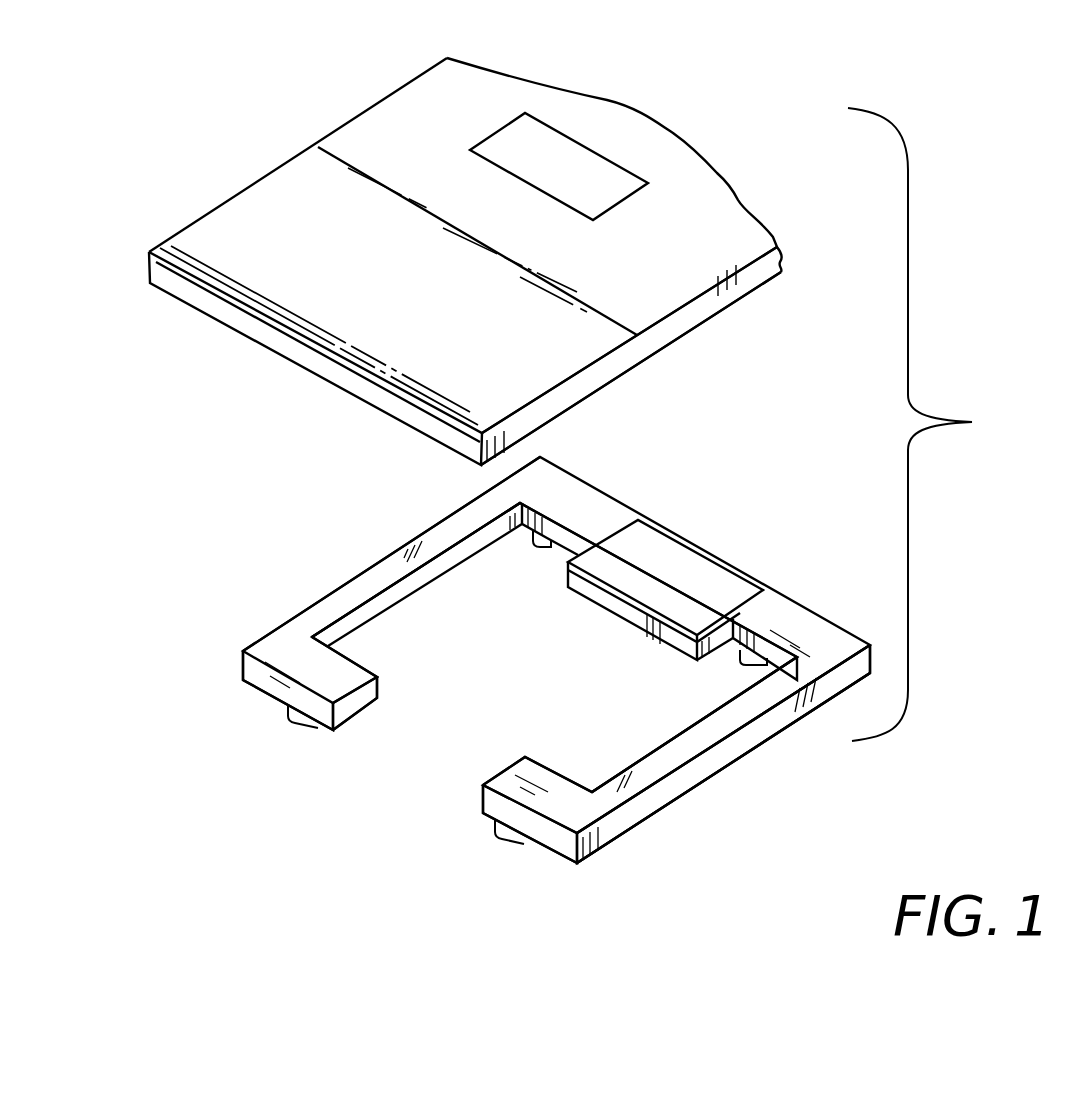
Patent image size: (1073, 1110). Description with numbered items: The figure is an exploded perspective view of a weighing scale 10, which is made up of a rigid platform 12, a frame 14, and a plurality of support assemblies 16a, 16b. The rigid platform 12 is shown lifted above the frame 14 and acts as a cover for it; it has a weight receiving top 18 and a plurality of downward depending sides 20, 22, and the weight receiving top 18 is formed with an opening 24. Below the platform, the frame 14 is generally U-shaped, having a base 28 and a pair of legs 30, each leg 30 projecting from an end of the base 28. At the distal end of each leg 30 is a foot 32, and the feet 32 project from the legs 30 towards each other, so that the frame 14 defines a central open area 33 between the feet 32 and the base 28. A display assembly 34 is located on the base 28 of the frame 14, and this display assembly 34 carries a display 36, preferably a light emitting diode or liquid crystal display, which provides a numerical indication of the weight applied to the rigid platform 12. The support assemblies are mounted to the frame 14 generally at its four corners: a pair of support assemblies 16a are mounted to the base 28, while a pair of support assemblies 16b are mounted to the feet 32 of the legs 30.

The weighing scale 10 is at (935, 424).
The rigid platform 12 is at (456, 342).
The frame 14 is at (560, 498).
The support assemblies 16a is at (547, 547).
The support assemblies 16b is at (301, 717).
The weight receiving top 18 is at (703, 203).
The downward depending side 20 is at (653, 338).
The downward depending side 22 is at (348, 377).
The opening 24 is at (560, 170).
The base 28 is at (782, 617).
The legs 30 is at (683, 750).
The foot 32 is at (330, 678).
The central open area 33 is at (575, 676).
The display assembly 34 is at (707, 577).
The display 36 is at (652, 547).